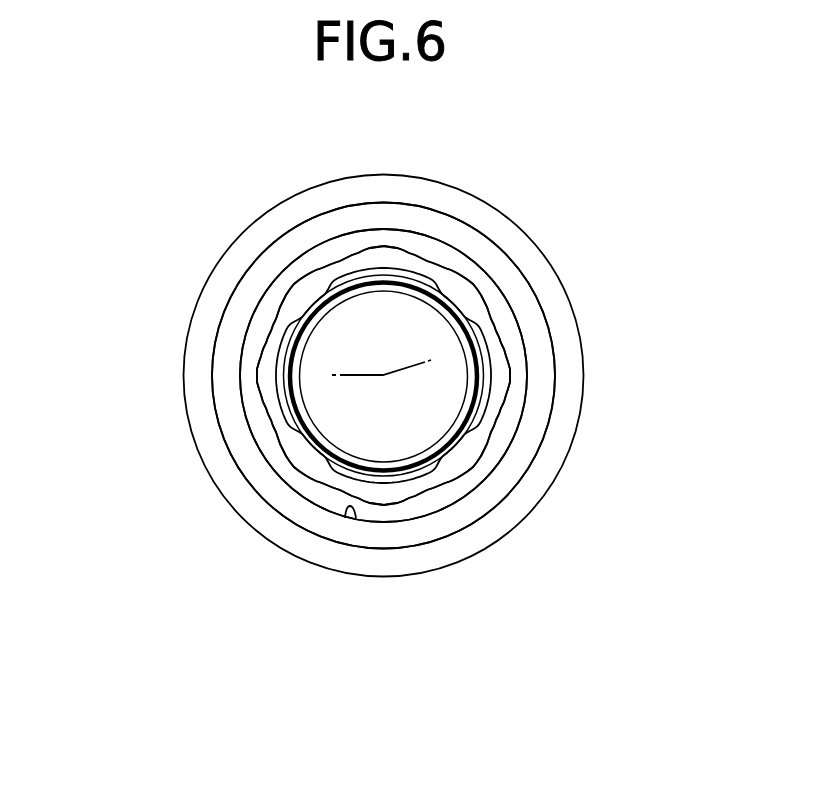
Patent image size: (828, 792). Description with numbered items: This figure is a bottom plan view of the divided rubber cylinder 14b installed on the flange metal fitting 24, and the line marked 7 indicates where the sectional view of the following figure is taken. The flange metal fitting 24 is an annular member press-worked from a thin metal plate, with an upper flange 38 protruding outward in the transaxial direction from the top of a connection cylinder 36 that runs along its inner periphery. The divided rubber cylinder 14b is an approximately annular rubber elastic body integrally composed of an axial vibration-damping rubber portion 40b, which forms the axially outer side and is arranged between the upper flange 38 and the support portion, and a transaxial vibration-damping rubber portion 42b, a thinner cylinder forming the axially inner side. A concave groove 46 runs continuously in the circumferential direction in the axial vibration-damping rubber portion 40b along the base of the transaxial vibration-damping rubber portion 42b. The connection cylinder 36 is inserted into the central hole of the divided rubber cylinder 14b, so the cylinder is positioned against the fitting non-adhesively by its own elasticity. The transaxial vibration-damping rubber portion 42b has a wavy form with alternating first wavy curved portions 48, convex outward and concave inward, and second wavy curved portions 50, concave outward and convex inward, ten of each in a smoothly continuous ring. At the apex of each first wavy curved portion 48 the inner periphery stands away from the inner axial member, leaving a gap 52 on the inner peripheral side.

The section line 7- 7 is at (167, 375).
The divided rubber cylinder 14b is at (451, 212).
The flange metal fitting 24 is at (521, 220).
The connection cylinder 36 is at (303, 441).
The upper flange 38 is at (215, 452).
The axial vibration-damping rubber portion 40b is at (269, 241).
The transaxial vibration-damping rubber portion 42b is at (304, 481).
The concave groove 46 is at (345, 518).
The first wavy curved portion 48 is at (383, 253).
The second wavy curved portion 50 is at (350, 265).
The gap 52 is at (322, 288).